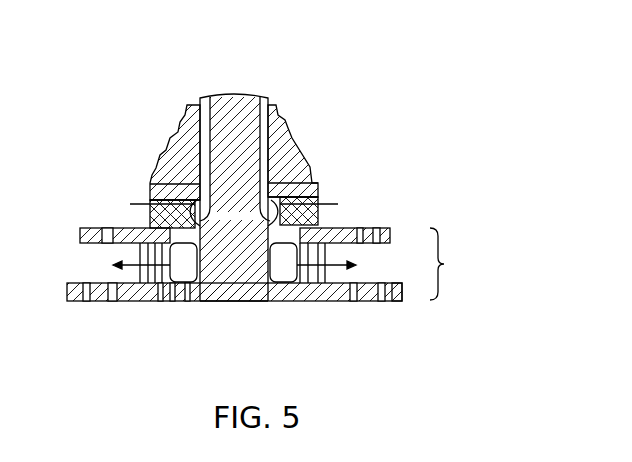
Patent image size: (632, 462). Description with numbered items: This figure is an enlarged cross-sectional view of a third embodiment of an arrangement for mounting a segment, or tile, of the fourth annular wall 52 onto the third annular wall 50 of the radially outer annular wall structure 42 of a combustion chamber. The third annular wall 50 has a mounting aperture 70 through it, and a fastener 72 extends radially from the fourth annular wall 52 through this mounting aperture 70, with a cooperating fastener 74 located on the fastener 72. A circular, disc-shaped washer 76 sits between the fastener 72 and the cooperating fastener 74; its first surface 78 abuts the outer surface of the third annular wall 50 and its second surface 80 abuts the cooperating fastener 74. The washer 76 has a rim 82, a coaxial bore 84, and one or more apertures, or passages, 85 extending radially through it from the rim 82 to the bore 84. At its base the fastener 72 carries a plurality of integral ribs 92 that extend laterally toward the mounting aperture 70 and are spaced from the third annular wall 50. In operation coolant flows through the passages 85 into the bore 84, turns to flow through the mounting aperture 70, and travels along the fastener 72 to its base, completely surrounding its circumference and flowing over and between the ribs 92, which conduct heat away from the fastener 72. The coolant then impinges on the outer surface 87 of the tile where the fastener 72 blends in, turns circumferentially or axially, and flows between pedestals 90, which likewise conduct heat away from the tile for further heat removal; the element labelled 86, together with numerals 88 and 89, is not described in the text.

The fastener 72 is at (250, 104).
The cooperating fastener 74 is at (281, 158).
The rim 82 is at (147, 183).
The washer 76 is at (318, 192).
The apertures, or passages 85 is at (143, 203).
The bore 84 is at (294, 198).
The second surface 80 is at (300, 197).
The pedestals 90 is at (300, 250).
The third annular wall 50 is at (378, 230).
The upper plate aperture 86 is at (93, 228).
The first surface 78 is at (140, 250).
The outer surface 87 is at (378, 283).
The fourth annular wall 52 is at (400, 302).
The lower plate apertures 88 is at (114, 302).
The lower plate aperture 89 is at (143, 302).
The ribs 92 is at (223, 302).
The mounting aperture 70 is at (268, 302).
The radially outer annular wall structure 42 is at (444, 264).